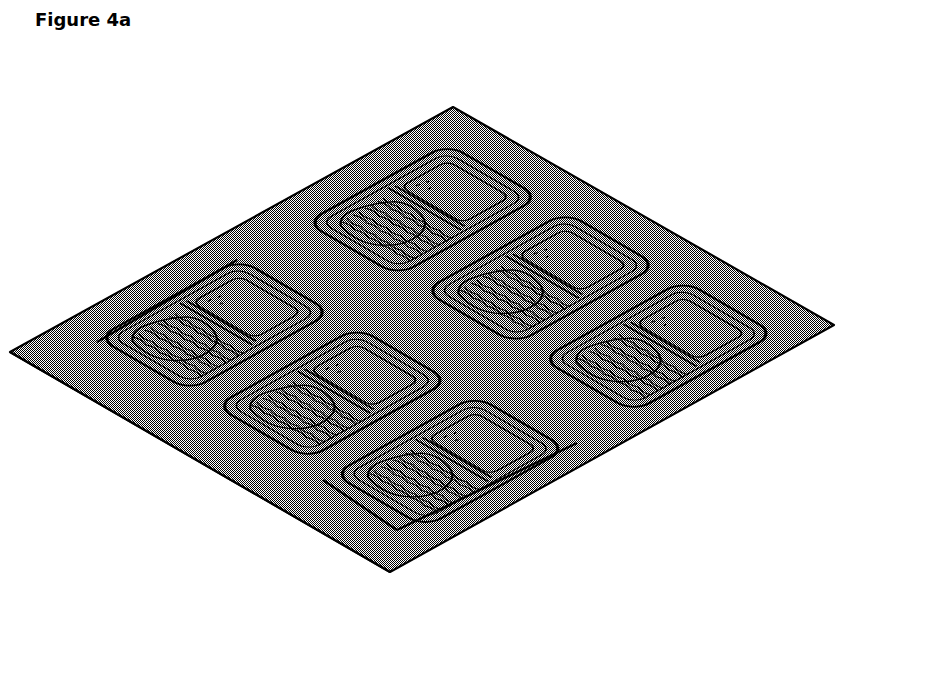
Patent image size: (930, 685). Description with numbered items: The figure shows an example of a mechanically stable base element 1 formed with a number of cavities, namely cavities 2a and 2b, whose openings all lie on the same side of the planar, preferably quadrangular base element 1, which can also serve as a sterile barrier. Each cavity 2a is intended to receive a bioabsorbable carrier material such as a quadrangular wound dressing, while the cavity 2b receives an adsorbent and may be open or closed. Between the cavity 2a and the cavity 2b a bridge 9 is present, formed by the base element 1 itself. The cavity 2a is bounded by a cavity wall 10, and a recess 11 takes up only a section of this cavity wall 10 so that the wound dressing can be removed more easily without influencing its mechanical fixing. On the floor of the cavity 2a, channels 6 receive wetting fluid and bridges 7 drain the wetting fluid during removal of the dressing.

The base element 1 is at (240, 488).
The cavity 2a is at (345, 485).
The cavity 2b is at (570, 472).
The channel 6 is at (468, 505).
The bridge 7 is at (490, 497).
The bridge 9 is at (579, 445).
The cavity wall 10 is at (152, 312).
The recess 11 is at (126, 370).